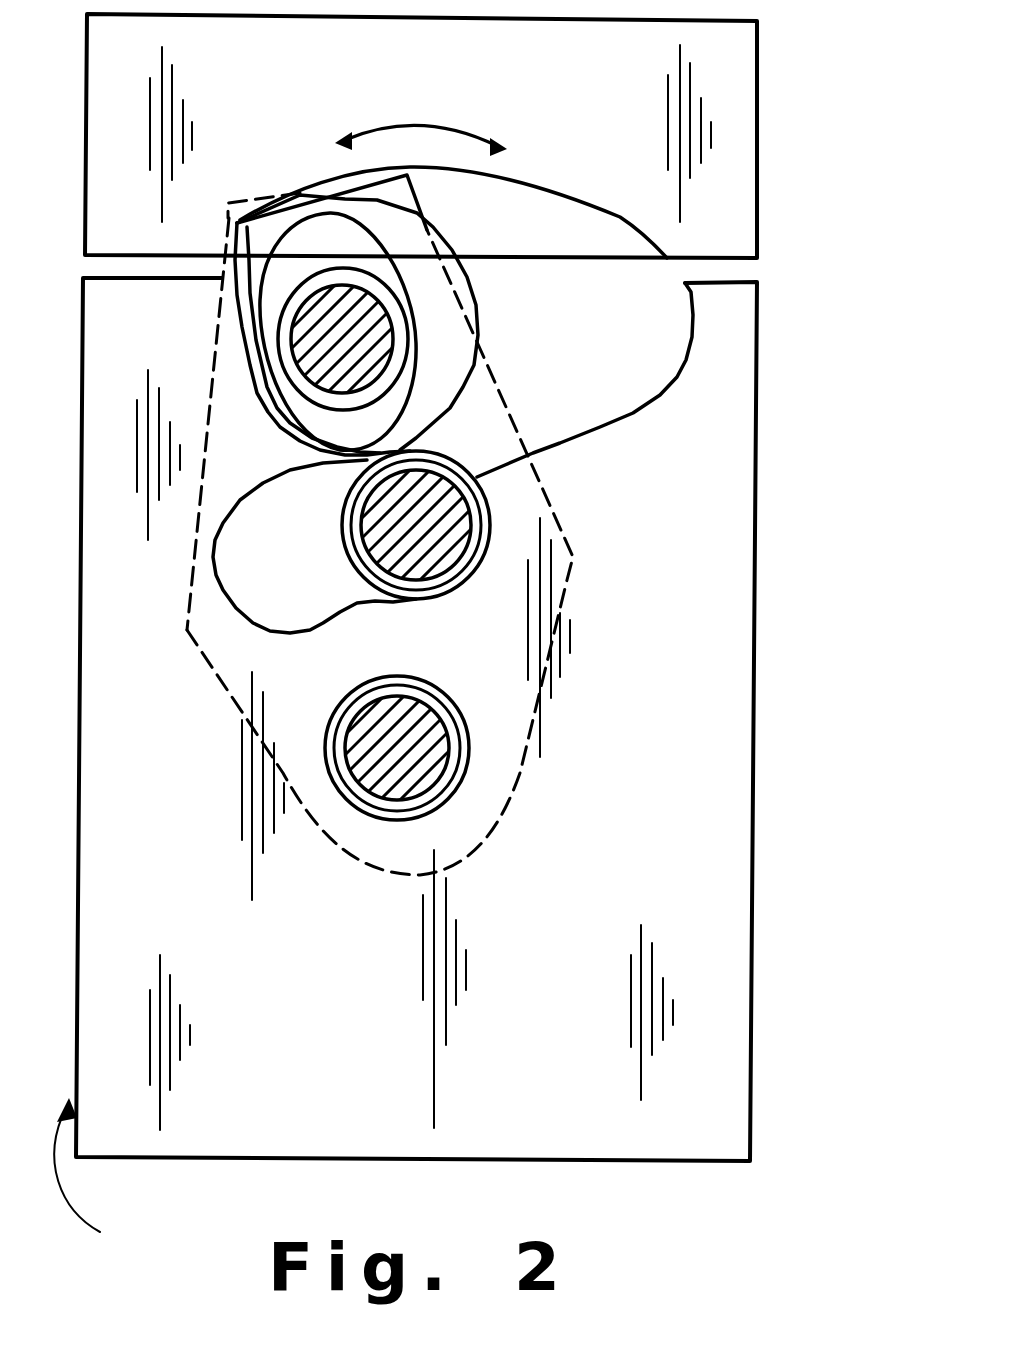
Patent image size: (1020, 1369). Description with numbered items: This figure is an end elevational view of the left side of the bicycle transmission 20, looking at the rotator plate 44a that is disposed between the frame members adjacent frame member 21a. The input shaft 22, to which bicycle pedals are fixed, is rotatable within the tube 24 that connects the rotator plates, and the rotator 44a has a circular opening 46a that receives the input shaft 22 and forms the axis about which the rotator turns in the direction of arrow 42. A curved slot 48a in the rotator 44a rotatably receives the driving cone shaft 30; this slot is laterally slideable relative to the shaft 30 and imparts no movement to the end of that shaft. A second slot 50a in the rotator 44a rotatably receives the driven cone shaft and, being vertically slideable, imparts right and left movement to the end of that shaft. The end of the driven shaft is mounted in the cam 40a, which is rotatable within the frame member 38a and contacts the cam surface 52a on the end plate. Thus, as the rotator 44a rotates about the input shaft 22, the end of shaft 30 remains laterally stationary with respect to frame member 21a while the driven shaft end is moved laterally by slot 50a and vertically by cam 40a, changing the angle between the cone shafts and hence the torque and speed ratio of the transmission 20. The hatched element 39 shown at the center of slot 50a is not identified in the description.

The bicycle transmission 20 is at (97, 1183).
The frame member 21a is at (737, 725).
The input shaft 22 is at (367, 740).
The tube 24 is at (373, 683).
The shaft 30 is at (447, 545).
The frame member 38a is at (743, 153).
The pivot pin 39 is at (363, 350).
The cam 40a is at (480, 300).
The arrow 42 is at (382, 123).
The rotator plate 44a is at (507, 803).
The circular opening 46a is at (473, 757).
The curved slot 48a is at (313, 630).
The slot 50a is at (292, 230).
The cam surface 52a is at (472, 173).